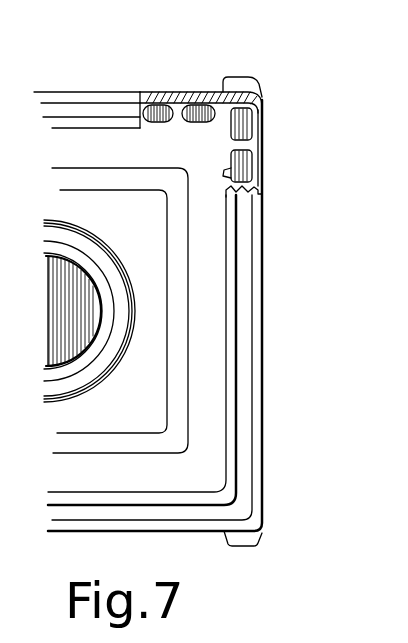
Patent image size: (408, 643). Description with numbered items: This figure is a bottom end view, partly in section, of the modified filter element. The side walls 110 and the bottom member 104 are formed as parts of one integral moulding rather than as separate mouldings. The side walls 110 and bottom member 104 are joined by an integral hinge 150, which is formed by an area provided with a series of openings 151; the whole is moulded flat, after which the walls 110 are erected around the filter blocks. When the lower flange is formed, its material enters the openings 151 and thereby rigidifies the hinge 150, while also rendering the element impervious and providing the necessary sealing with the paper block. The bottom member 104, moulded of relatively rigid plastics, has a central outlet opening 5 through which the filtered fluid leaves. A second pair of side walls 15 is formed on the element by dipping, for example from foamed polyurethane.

The second pair of side walls 15 is at (188, 91).
The openings 151 is at (250, 167).
The integral hinge 150 is at (228, 173).
The side walls 110 is at (262, 188).
The bottom member 104 is at (212, 277).
The central outlet opening 5 is at (100, 241).